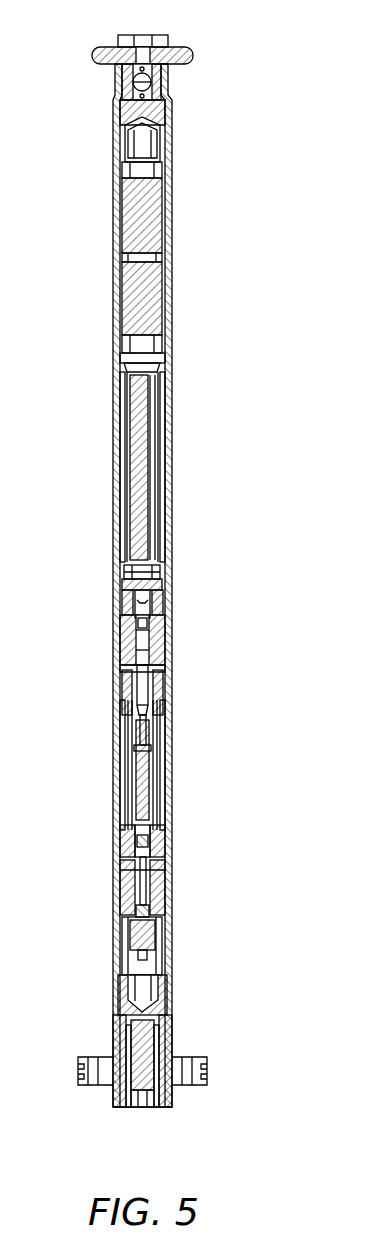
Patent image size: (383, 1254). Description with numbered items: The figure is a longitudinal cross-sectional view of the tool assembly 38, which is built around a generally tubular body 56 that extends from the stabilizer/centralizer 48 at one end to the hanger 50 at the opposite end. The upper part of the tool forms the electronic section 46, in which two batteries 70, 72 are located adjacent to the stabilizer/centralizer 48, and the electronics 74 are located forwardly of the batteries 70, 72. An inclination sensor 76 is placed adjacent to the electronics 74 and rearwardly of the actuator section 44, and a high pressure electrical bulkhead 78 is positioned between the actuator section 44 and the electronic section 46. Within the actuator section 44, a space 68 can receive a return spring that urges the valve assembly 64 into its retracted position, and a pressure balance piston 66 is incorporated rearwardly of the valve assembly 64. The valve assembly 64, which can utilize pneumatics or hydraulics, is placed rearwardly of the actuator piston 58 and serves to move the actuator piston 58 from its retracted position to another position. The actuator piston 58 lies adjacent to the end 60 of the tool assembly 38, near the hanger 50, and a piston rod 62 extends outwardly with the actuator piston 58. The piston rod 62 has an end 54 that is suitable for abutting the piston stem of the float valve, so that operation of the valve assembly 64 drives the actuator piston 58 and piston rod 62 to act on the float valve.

The tool assembly 38 is at (170, 517).
The actuator section 44 is at (112, 765).
The electronic section 46 is at (172, 370).
The stabilizer/centralizer 48 is at (190, 48).
The hanger 50 is at (207, 1066).
The end 54 is at (142, 1100).
The tubular body 56 is at (112, 455).
The actuator piston 58 is at (160, 1002).
The end 60 is at (163, 1100).
The piston rod 62 is at (118, 1093).
The valve assembly 64 is at (166, 890).
The pressure balance piston 66 is at (166, 835).
The space 68 is at (160, 780).
The battery 70 is at (130, 215).
The battery 72 is at (130, 305).
The electronics 74 is at (147, 427).
The inclination sensor 76 is at (162, 588).
The high pressure electrical bulkhead 78 is at (144, 655).